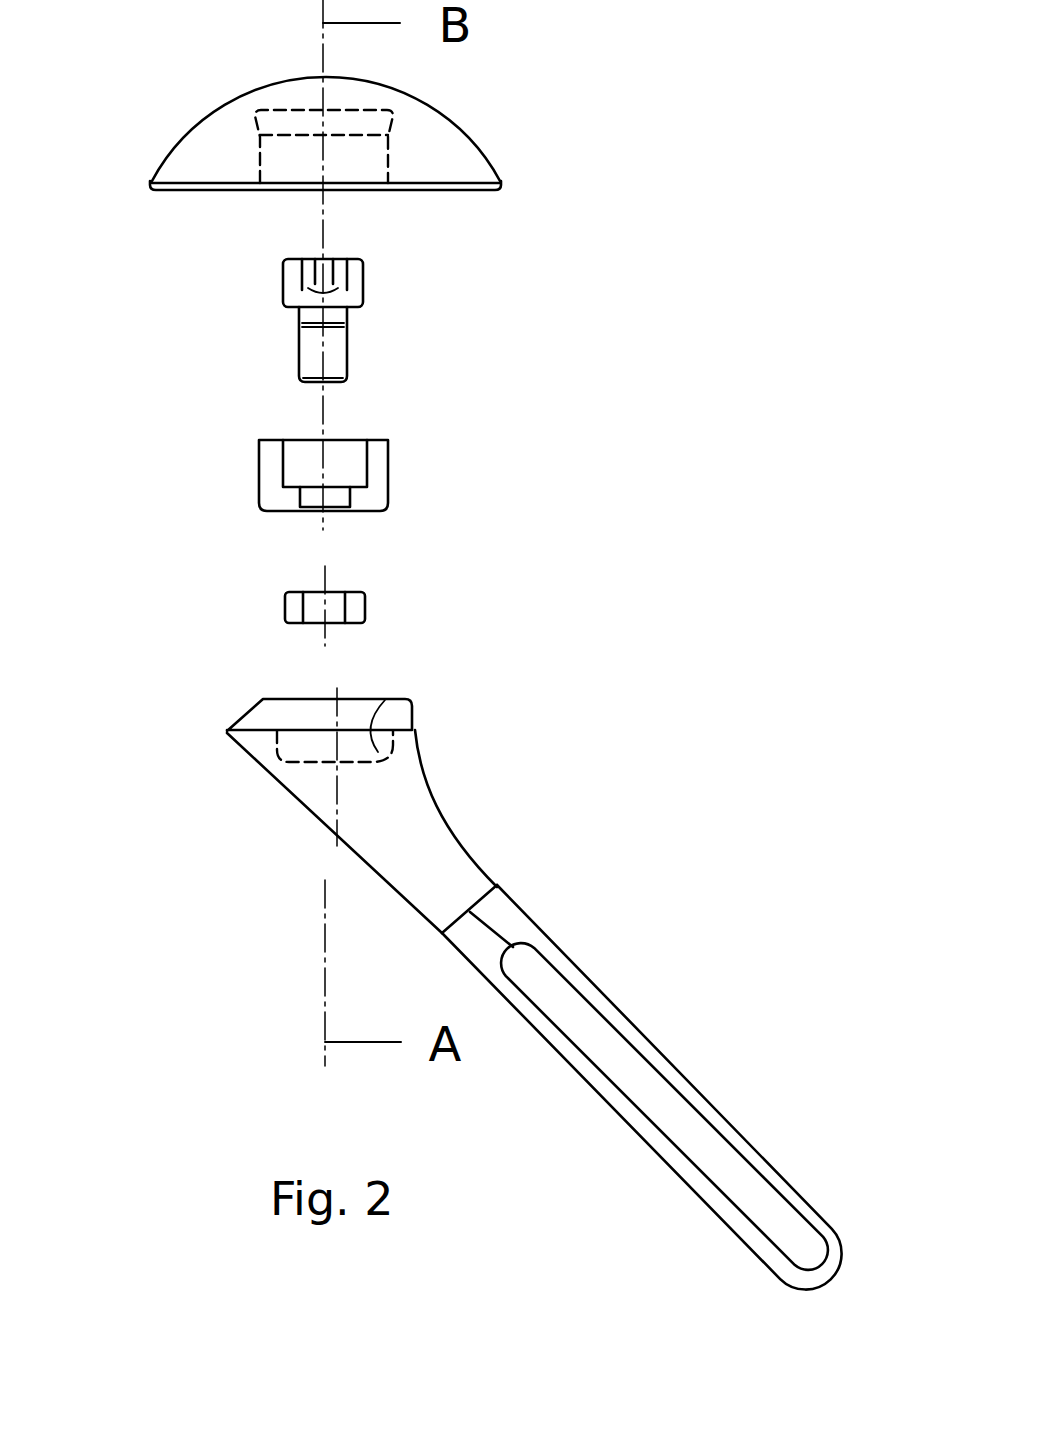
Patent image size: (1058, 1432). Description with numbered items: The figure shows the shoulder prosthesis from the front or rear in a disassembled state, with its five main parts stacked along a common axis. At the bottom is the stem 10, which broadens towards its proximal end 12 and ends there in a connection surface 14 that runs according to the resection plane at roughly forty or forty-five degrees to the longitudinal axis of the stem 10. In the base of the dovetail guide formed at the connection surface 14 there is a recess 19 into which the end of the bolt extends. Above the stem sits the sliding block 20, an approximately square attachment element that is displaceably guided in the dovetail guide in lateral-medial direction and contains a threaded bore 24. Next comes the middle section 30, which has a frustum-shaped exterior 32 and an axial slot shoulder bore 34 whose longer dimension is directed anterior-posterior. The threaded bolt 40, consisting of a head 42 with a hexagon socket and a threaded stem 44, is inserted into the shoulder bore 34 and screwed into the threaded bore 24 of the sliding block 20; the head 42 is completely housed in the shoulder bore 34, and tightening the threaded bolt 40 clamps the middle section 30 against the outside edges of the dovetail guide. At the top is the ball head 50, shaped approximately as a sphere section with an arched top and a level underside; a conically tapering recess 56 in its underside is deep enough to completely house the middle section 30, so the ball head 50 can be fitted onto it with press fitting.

The stem 10 is at (526, 941).
The proximal end 12 is at (255, 748).
The connection surface 14 is at (282, 697).
The recess 19 is at (388, 697).
The sliding block 20 is at (307, 583).
The threaded bore 24 is at (312, 590).
The middle section 30 is at (411, 426).
The frustum-shaped exterior 32 is at (388, 462).
The shoulder bore 34 is at (358, 467).
The threaded bolt 40 is at (237, 322).
The head 42 is at (283, 278).
The threaded stem 44 is at (297, 347).
The ball head 50 is at (447, 152).
The conically tapering recess 56 is at (386, 150).